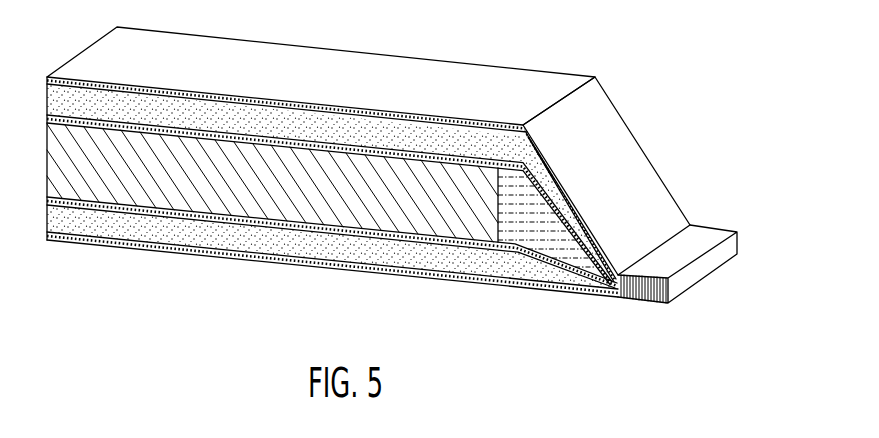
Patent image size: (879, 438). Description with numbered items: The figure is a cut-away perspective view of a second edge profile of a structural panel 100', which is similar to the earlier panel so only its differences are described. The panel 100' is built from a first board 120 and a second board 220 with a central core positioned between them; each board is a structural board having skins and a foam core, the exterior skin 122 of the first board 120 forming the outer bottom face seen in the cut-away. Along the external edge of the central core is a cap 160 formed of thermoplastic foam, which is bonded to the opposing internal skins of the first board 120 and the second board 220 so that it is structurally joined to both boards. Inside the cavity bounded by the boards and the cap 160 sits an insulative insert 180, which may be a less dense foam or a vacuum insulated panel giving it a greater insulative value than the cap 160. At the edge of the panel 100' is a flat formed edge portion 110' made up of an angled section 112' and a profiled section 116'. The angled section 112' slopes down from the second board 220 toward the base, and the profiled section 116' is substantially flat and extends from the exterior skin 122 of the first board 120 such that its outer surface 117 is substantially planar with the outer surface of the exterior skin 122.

The panel 100' is at (422, 179).
The flat formed edge portion 110' is at (660, 217).
The angled section 112' is at (606, 176).
The profiled section 116' is at (708, 291).
The outer surface of the profiled section 117 is at (650, 302).
The first board 120 is at (299, 262).
The first skin 122 is at (380, 270).
The caps 160 is at (525, 230).
The insulative insert 180 is at (231, 200).
The second board 220 is at (338, 56).